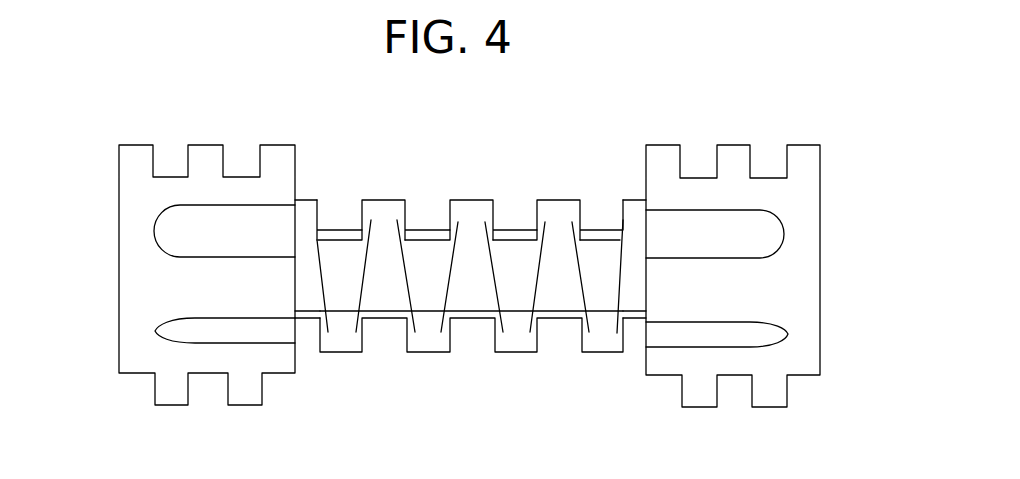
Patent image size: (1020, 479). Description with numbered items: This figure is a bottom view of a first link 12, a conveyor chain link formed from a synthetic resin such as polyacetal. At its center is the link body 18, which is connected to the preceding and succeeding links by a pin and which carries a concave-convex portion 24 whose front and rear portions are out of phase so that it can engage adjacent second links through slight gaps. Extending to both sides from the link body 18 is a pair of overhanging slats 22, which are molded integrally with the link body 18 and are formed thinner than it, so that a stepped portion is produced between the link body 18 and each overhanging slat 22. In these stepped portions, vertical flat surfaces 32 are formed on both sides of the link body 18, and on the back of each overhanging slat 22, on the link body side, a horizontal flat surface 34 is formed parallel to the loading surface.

The first link 12 is at (839, 161).
The link body 18 is at (388, 300).
The overhanging slats 22 is at (133, 273).
The concave-convex portion 24 is at (470, 200).
The vertical flat surfaces 32 is at (296, 229).
The horizontal flat surface 34 is at (240, 298).